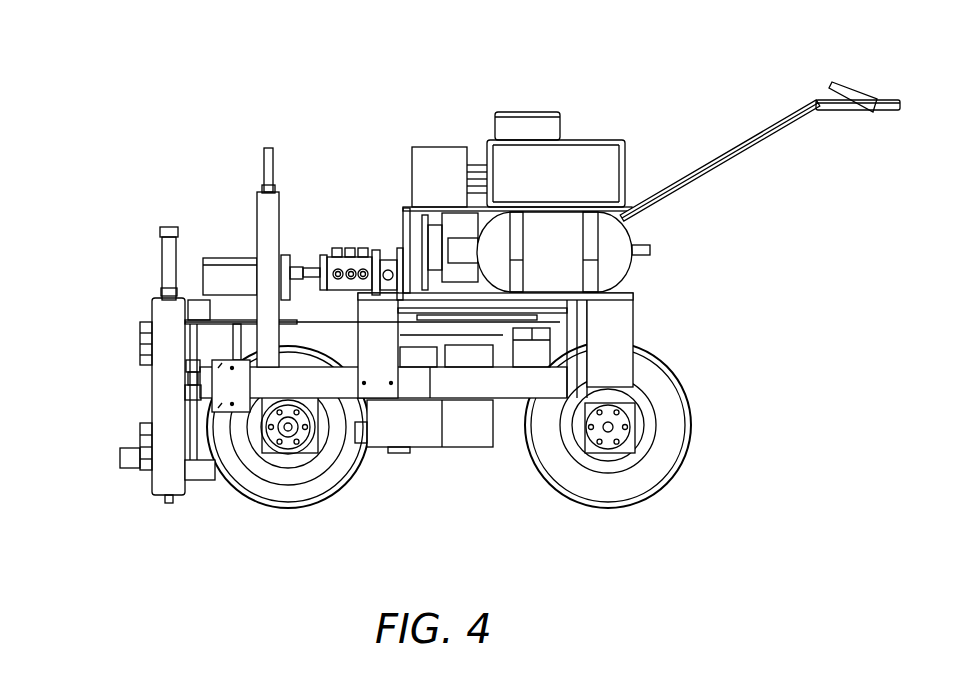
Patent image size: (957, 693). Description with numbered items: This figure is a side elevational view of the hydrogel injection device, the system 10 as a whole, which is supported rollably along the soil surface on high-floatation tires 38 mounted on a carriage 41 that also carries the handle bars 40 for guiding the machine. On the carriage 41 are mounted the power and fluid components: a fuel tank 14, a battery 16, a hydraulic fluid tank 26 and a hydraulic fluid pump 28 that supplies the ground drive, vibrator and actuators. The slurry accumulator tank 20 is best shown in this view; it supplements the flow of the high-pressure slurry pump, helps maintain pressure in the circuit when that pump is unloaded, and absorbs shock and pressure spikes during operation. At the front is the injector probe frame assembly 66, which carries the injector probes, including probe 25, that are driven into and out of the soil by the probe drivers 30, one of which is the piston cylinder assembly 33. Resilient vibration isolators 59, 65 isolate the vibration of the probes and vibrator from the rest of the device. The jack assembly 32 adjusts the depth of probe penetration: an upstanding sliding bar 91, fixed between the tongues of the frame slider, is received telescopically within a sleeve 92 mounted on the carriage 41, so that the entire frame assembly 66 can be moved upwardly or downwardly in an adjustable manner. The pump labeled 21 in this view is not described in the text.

The system 10 is at (616, 36).
The fuel tank 14 is at (588, 134).
The battery 16 is at (466, 134).
The slurry accumulator tank 20 is at (597, 254).
The pump 21 is at (342, 249).
The probe 25 is at (120, 516).
The hydraulic fluid tank 26 is at (424, 441).
The hydraulic fluid pump 28 is at (217, 247).
The probe drivers 30 is at (97, 222).
The jack assembly 32 is at (310, 257).
The piston cylinder assembly 33 is at (123, 263).
The high-floatation tires 38 is at (462, 440).
The handle bars 40 is at (760, 153).
The carriage 41 is at (383, 437).
The vibration isolator 59 is at (257, 502).
The vibration isolator 65 is at (241, 275).
The injector probe frame assembly 66 is at (132, 396).
The sliding bar 91 is at (154, 362).
The sleeve 92 is at (159, 393).